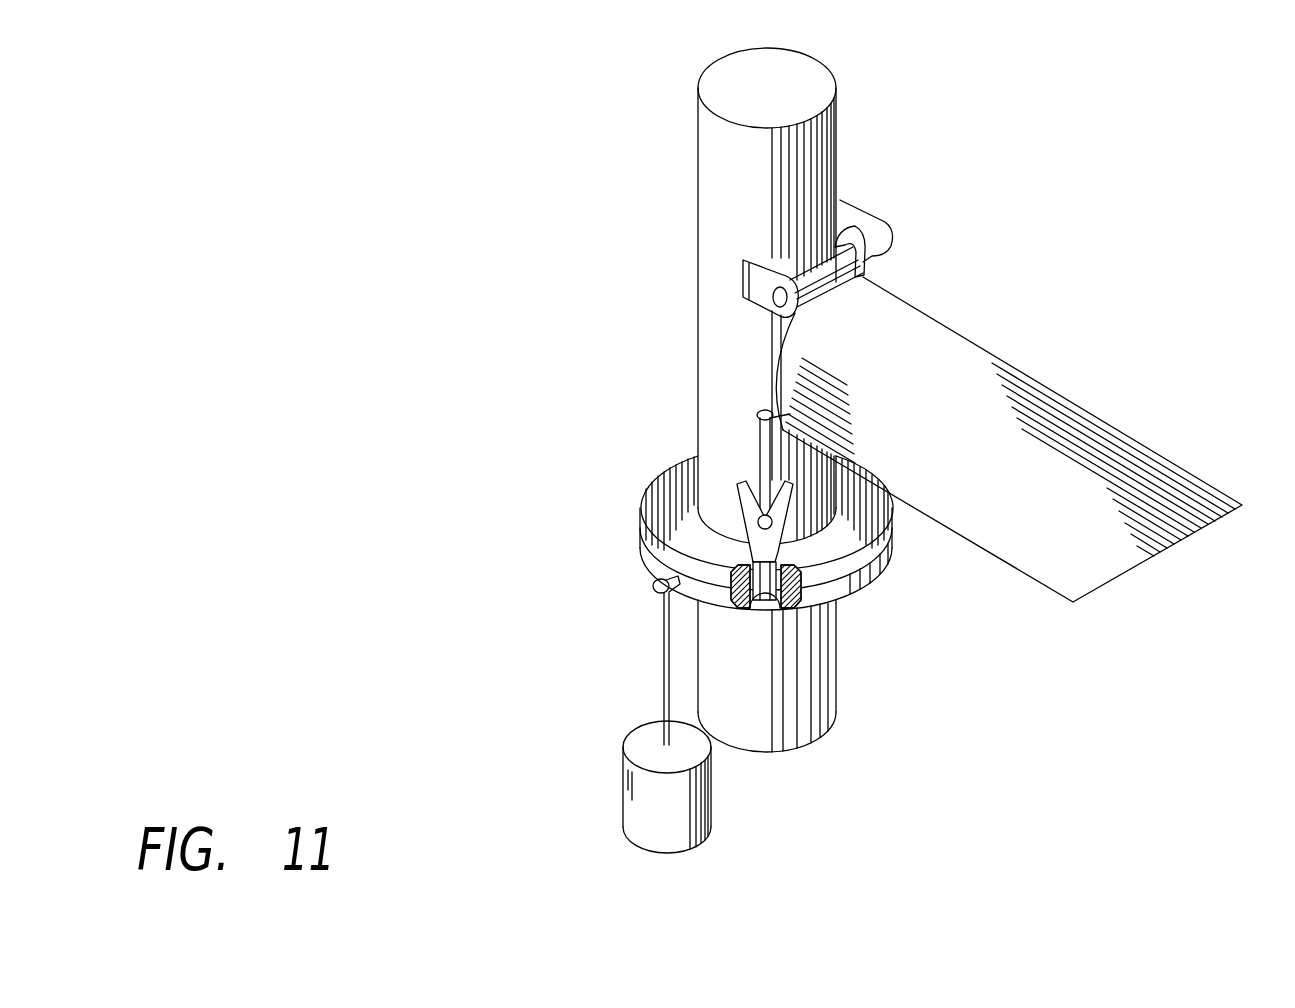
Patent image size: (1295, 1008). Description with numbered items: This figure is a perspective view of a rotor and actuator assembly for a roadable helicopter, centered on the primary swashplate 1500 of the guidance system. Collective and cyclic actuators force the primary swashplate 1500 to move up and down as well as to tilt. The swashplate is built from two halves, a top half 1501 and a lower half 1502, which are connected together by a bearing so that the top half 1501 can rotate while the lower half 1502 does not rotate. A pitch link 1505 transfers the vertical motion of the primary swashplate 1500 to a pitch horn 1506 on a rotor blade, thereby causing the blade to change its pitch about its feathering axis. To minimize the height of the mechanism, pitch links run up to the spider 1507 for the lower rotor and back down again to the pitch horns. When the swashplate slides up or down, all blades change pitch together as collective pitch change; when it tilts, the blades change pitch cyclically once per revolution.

The primary swashplate 1500 is at (630, 462).
The top half of primary swashplate 1501 is at (648, 547).
The lower half of primary swashplate 1502 is at (652, 570).
The pitch link 1505 is at (742, 422).
The pitch horn 1506 is at (807, 347).
The spider 1507 is at (1103, 585).